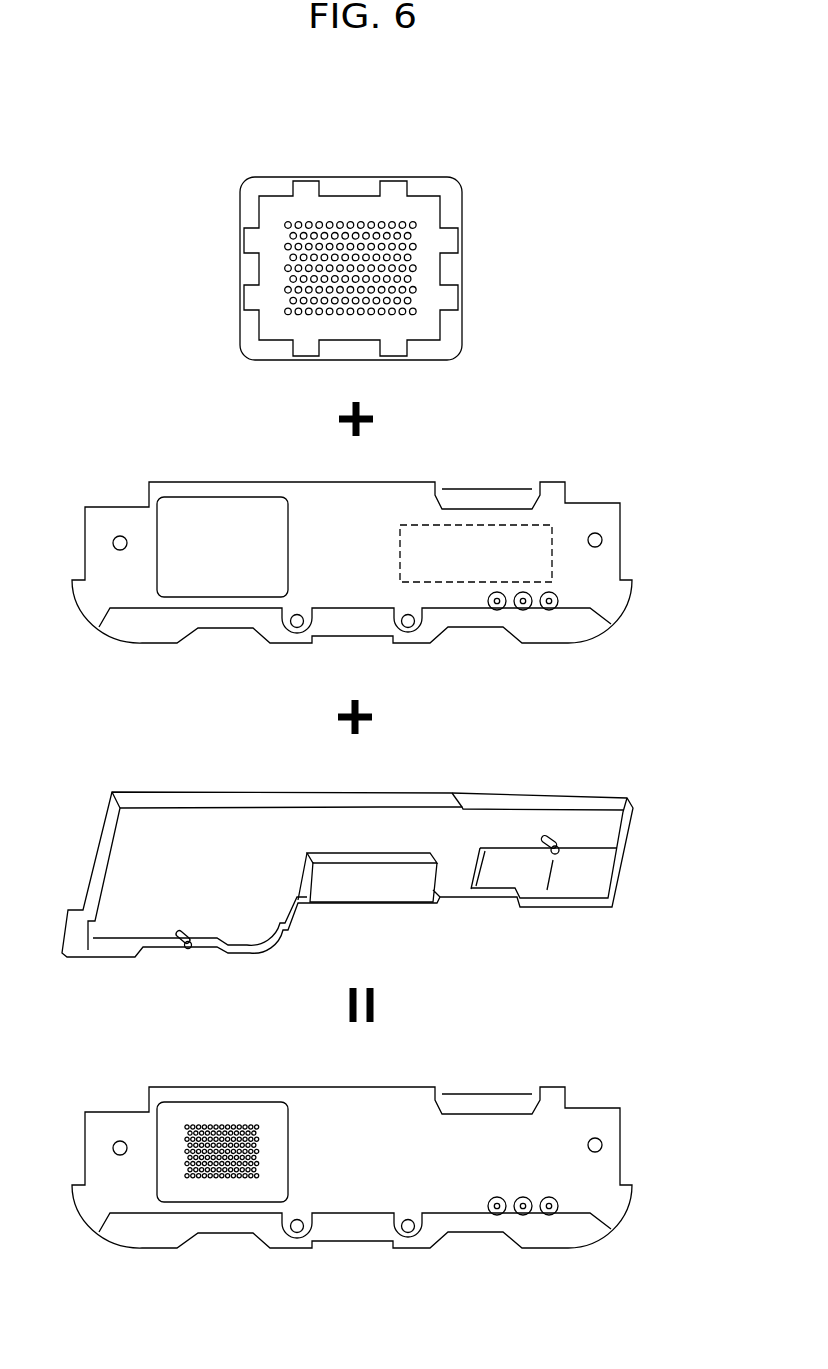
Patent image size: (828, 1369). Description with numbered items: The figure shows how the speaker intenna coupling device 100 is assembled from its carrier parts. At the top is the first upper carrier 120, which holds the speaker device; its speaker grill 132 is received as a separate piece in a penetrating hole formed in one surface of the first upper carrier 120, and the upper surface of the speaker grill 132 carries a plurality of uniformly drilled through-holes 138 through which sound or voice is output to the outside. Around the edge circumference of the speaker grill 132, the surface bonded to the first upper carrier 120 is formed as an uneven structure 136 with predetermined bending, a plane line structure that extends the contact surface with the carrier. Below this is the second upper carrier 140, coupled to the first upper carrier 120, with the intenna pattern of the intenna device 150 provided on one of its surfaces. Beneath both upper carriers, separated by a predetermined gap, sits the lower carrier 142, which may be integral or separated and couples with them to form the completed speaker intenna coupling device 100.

The speaker intenna coupling device 100 is at (582, 1173).
The first upper carrier 120 is at (390, 240).
The speaker grill 132 is at (350, 212).
The uneven structure 136 is at (306, 182).
The through-holes 138 is at (412, 256).
The second upper carrier 140 is at (384, 533).
The lower carrier 142 is at (590, 830).
The intenna device 150 is at (525, 550).